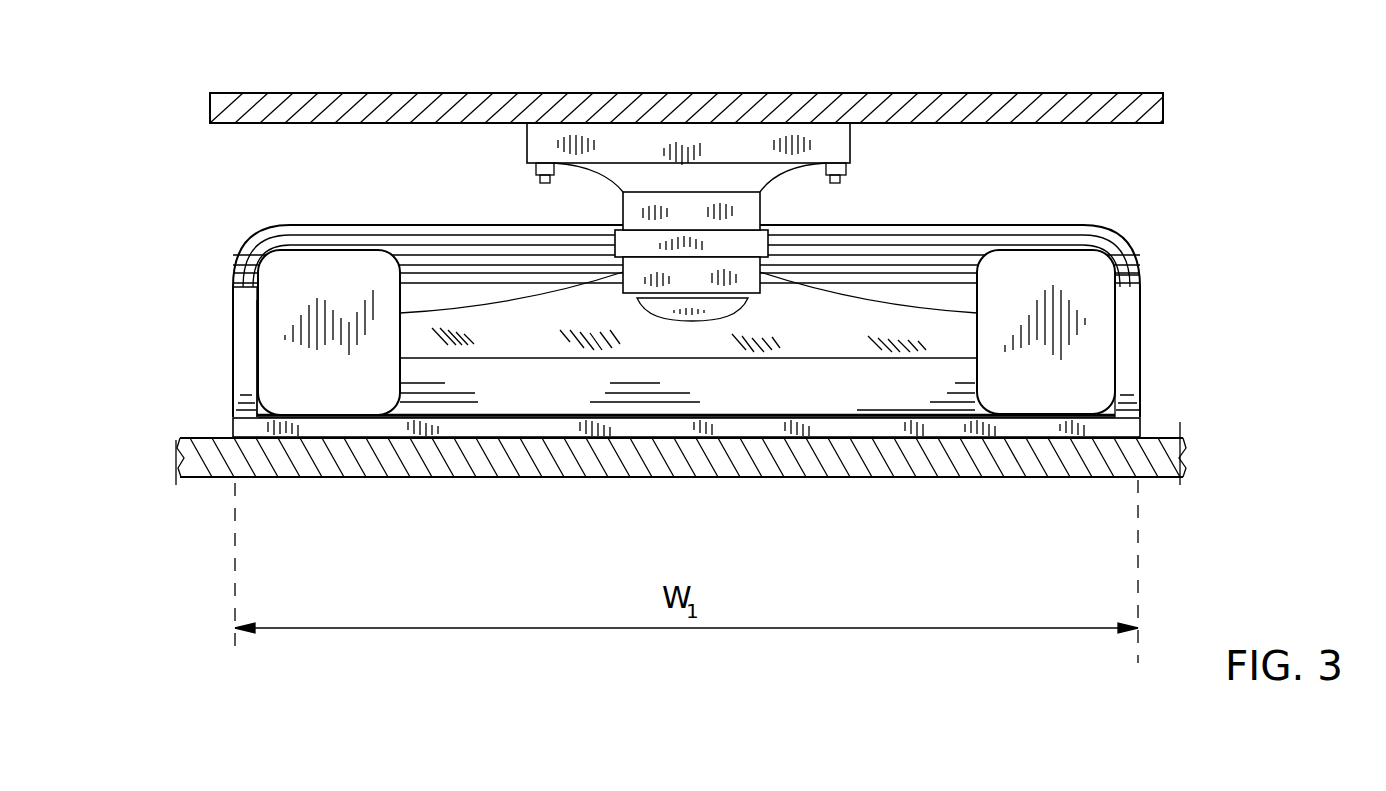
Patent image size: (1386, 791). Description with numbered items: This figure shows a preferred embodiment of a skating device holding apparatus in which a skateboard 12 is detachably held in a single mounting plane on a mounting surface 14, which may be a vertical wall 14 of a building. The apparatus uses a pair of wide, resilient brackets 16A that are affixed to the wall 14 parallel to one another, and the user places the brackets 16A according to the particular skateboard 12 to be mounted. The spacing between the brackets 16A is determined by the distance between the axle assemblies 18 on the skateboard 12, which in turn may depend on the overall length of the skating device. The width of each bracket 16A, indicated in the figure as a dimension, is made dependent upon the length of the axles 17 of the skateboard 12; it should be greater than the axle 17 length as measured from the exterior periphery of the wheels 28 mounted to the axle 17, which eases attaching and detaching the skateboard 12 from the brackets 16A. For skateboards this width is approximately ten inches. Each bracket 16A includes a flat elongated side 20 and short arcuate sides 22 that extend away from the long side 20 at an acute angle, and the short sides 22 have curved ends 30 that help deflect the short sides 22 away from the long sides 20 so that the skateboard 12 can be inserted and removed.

The skateboard 12 is at (867, 102).
The mounting surface 14 is at (293, 477).
The resilient bracket 16A is at (890, 392).
The axle 17 is at (493, 335).
The axle assembly 18 is at (692, 207).
The flat elongated side 20 is at (232, 428).
The short arcuate side 22 is at (233, 324).
The wheel 28 is at (292, 270).
The curved end 30 is at (1127, 247).